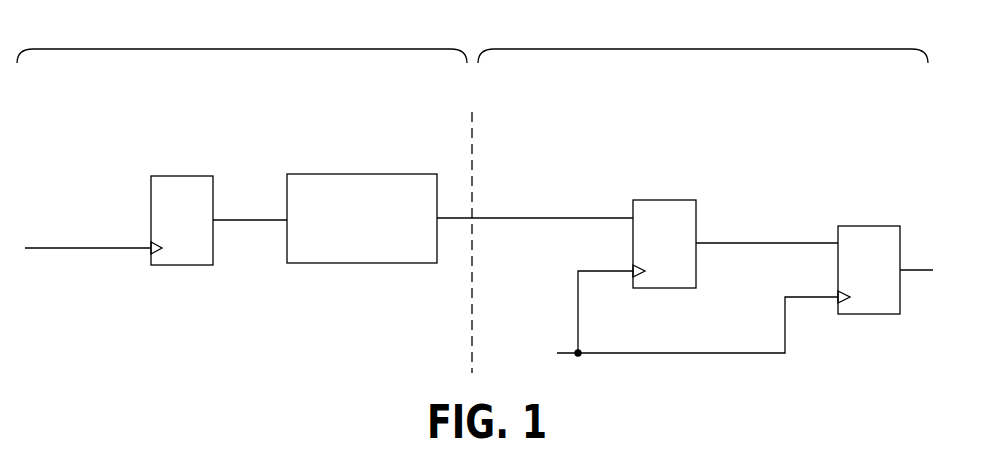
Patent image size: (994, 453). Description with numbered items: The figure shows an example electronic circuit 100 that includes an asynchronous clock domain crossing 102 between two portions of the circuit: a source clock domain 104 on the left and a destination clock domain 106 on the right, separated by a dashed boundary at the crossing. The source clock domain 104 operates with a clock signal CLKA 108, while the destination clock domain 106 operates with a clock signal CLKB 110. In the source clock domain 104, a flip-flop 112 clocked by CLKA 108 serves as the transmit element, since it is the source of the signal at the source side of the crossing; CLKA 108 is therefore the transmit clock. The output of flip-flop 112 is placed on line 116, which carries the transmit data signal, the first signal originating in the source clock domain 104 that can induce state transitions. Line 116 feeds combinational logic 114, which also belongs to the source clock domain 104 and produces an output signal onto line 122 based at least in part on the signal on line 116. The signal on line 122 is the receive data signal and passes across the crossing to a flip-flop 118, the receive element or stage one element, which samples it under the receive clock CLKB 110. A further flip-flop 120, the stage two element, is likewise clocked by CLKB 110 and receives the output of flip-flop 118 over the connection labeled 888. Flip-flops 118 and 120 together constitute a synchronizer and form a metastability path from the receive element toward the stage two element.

The electronic circuit 100 is at (144, 346).
The asynchronous clock domain crossing 102 is at (467, 148).
The source clock domain 104 is at (242, 42).
The destination clock domain 106 is at (703, 42).
The clock signal CLKA 108 is at (116, 250).
The clock signal CLKB 110 is at (500, 340).
The flip-flop 112 is at (172, 265).
The combinational logic 114 is at (385, 263).
The line 116 is at (235, 218).
The flip-flop 118 is at (653, 288).
The flip-flop 120 is at (887, 314).
The line 122 is at (550, 216).
The intermediate synchronizer signal 888 is at (724, 242).